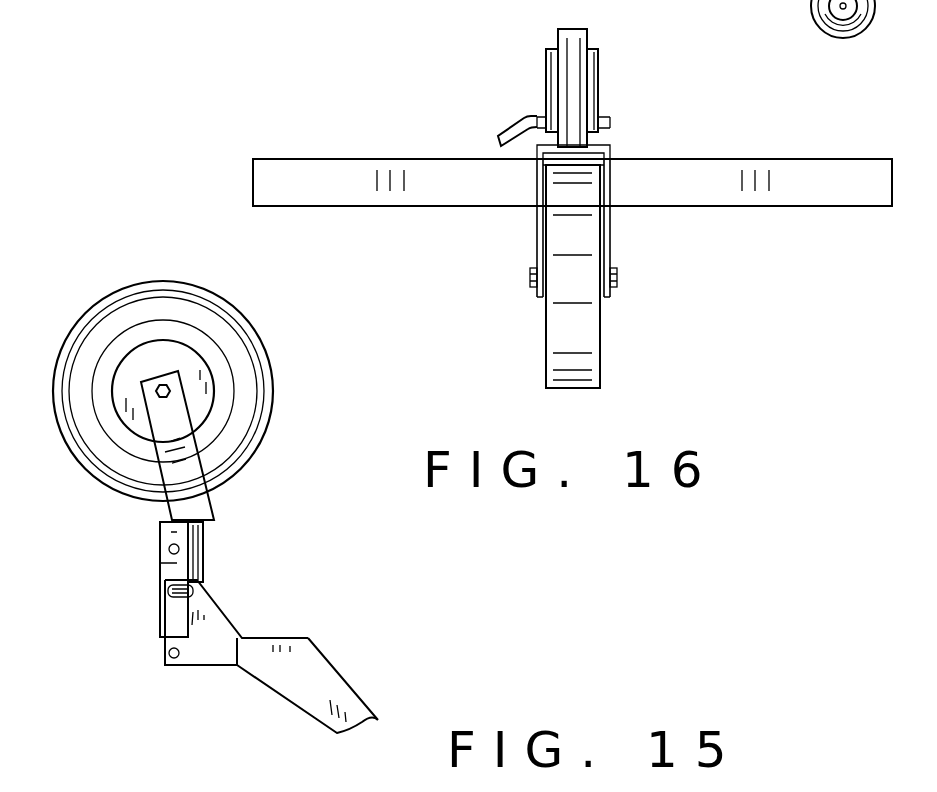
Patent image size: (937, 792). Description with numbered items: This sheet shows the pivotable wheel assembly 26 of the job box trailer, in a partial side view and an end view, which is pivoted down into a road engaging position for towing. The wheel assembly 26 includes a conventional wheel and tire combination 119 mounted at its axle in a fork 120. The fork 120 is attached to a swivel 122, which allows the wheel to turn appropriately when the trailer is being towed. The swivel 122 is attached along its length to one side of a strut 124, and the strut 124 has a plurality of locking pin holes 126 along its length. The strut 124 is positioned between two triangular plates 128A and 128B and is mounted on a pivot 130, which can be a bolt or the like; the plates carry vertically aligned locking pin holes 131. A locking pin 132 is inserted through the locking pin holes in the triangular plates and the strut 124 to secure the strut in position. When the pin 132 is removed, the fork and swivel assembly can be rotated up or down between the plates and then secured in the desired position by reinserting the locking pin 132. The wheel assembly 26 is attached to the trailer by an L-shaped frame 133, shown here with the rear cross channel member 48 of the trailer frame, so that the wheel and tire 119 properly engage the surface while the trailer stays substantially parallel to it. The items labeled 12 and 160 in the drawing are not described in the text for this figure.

In FIG. 16, the caster fork 12 is at (606, 250).
In FIG. 16, the wheel assembly 26 is at (625, 342).
In FIG. 15, the wheel assembly 26 is at (292, 393).
In FIG. 16, the rear cross channel member 48 is at (798, 192).
In FIG. 15, the wheel and tire combination 119 is at (185, 350).
In FIG. 16, the fork 120 is at (536, 240).
In FIG. 15, the fork 120 is at (210, 467).
In FIG. 16, the swivel 122 is at (580, 152).
In FIG. 15, the swivel 122 is at (205, 545).
In FIG. 15, the strut 124 is at (171, 565).
In FIG. 15, the locking pin holes 126 is at (165, 548).
In FIG. 16, the triangular plate 128A is at (590, 80).
In FIG. 15, the triangular plate 128A is at (205, 648).
In FIG. 16, the triangular plate 128B is at (546, 80).
In FIG. 15, the pivot 130 is at (195, 590).
In FIG. 15, the locking pin holes 131 is at (173, 665).
In FIG. 16, the locking pin 132 is at (605, 110).
In FIG. 15, the L-shaped frame 133 is at (370, 682).
In FIG. 16, the wheel 160 is at (812, 2).